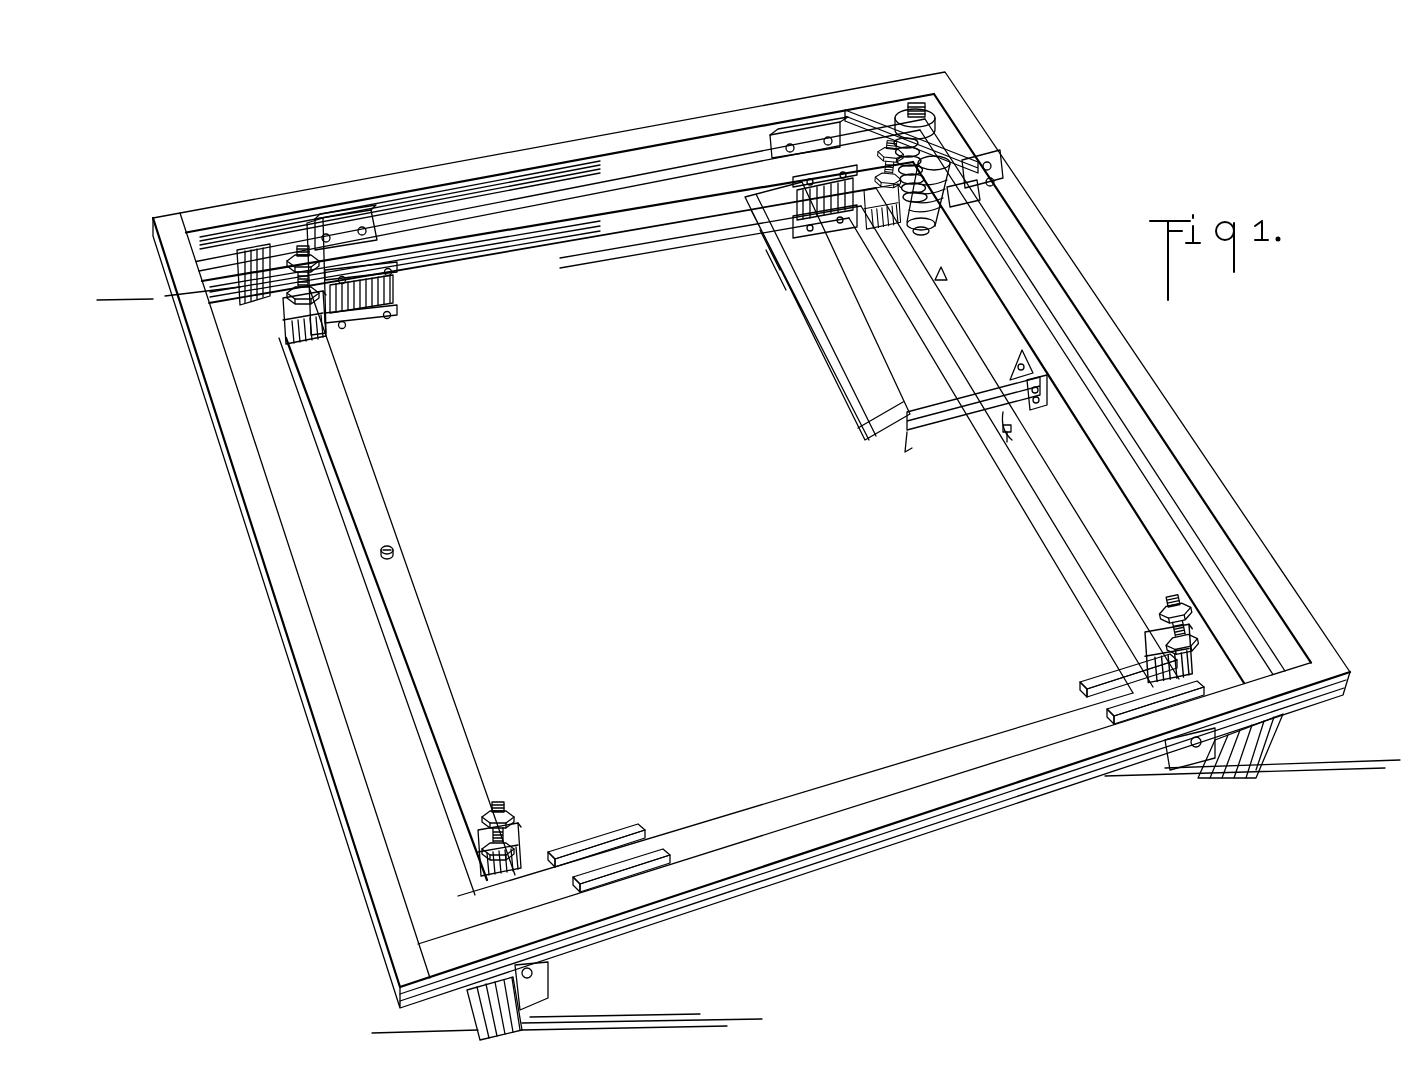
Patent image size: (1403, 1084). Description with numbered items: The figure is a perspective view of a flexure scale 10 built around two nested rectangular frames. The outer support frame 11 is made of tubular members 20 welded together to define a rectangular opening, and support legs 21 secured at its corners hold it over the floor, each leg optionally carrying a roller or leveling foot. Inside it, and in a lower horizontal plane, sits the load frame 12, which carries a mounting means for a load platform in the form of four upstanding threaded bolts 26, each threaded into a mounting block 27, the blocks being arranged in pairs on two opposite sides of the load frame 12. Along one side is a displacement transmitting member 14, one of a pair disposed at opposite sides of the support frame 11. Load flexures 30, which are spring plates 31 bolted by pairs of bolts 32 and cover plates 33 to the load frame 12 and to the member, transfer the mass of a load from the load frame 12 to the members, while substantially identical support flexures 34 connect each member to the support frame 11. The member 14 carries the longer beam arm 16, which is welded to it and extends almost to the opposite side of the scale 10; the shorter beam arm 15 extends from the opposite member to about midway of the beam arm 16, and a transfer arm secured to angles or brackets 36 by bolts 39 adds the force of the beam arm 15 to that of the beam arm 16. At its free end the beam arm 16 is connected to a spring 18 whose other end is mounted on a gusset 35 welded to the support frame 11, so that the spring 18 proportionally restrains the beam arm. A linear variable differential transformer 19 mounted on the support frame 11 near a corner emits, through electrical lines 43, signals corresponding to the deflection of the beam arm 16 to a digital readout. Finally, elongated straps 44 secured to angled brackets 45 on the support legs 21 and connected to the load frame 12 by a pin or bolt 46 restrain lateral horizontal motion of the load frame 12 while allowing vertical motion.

The flexure scale 10 is at (1246, 387).
The support frame 11 is at (1092, 298).
The load frame 12 is at (404, 507).
The displacement transmitting member 14 is at (780, 797).
The beam arm 15 is at (835, 354).
The beam arm 16 is at (1105, 508).
The spring 18 is at (933, 150).
The linear variable differential transformer 19 is at (957, 158).
The tubular members 20 is at (687, 893).
The support legs 21 is at (248, 297).
The threaded bolts 26 is at (300, 316).
The mounting block 27 is at (312, 333).
The load flexures 30 is at (400, 262).
The spring plates 31 is at (400, 293).
The bolts 32 is at (345, 321).
The cover plates 33 is at (393, 323).
The support flexures 34 is at (362, 213).
The gusset 35 is at (868, 118).
The angle or bracket 36 is at (922, 402).
The bolts 39 is at (912, 432).
The electrical lines 43 is at (996, 180).
The elongated straps 44 is at (548, 968).
The angled brackets 45 is at (550, 990).
The pin or bolt 46 is at (394, 551).